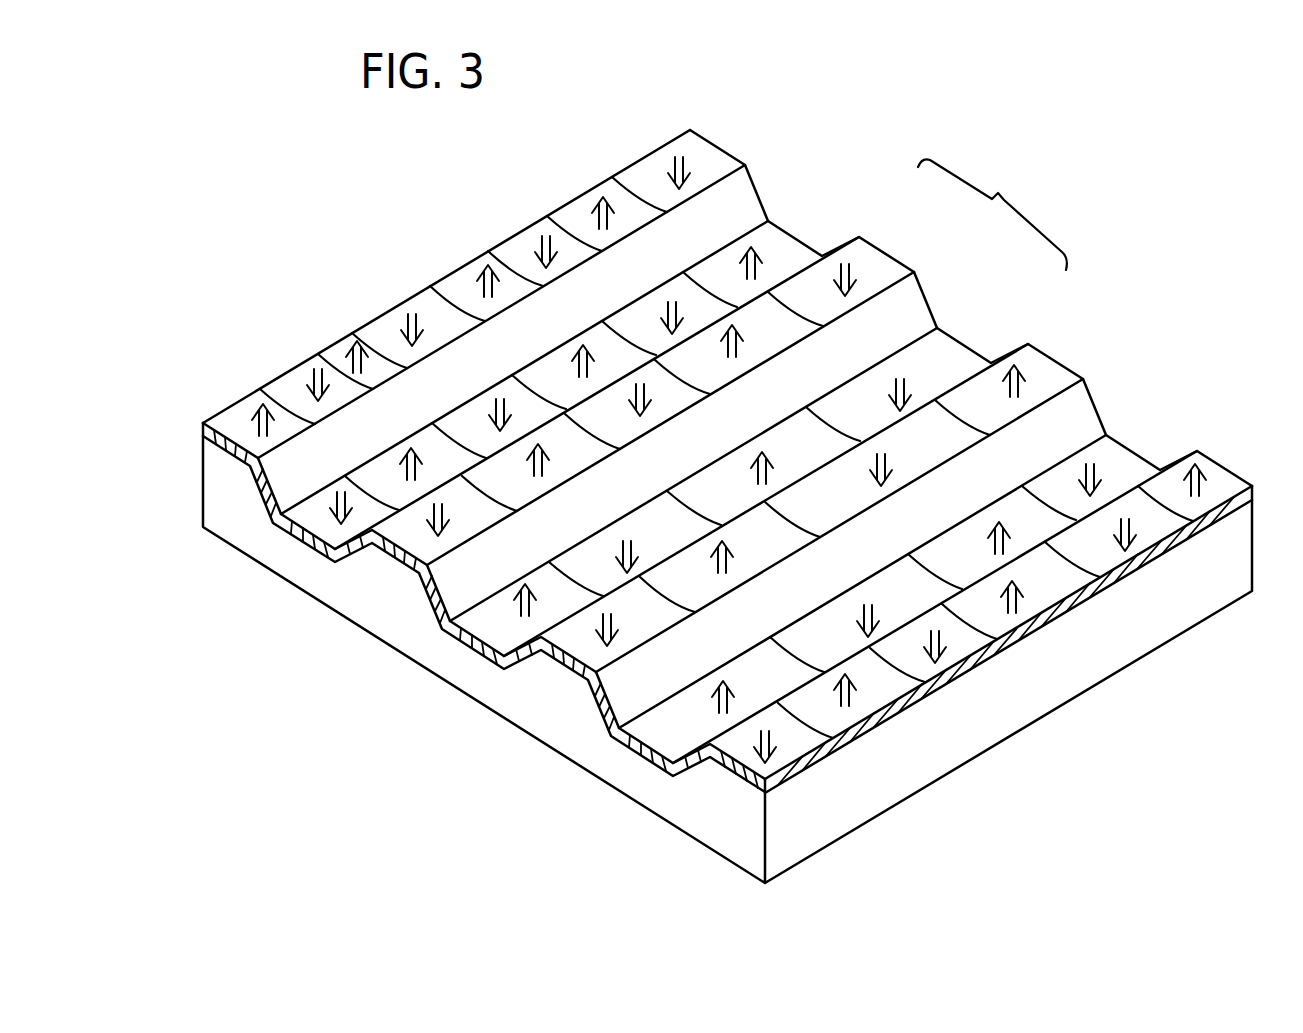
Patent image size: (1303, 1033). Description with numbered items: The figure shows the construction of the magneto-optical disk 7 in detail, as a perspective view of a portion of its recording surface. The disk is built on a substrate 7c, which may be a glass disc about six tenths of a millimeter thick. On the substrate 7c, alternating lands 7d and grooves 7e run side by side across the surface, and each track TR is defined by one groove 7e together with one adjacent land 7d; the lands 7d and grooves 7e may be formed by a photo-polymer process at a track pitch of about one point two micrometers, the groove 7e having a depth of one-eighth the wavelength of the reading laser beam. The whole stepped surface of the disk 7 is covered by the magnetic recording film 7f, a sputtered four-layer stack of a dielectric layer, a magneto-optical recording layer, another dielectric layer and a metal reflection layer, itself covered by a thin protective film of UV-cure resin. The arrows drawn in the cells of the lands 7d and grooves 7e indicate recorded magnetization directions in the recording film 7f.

The magneto-optical disk 7 is at (453, 268).
The substrate 7c is at (400, 635).
The land 7d is at (704, 152).
The groove 7e is at (783, 240).
The magnetic recording film 7f is at (640, 742).
The track TR is at (992, 210).